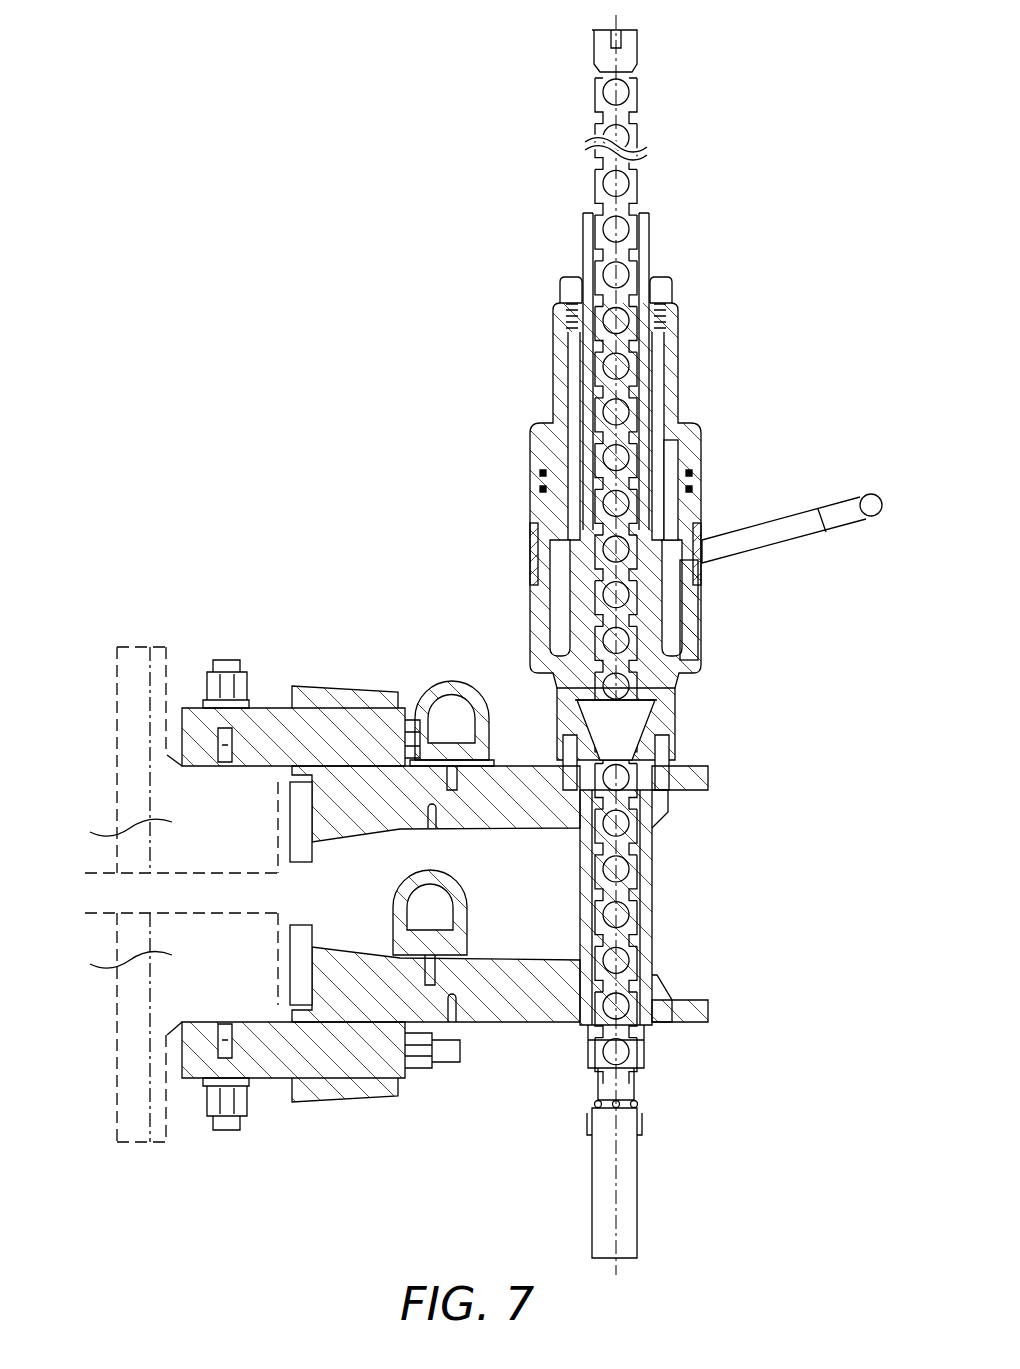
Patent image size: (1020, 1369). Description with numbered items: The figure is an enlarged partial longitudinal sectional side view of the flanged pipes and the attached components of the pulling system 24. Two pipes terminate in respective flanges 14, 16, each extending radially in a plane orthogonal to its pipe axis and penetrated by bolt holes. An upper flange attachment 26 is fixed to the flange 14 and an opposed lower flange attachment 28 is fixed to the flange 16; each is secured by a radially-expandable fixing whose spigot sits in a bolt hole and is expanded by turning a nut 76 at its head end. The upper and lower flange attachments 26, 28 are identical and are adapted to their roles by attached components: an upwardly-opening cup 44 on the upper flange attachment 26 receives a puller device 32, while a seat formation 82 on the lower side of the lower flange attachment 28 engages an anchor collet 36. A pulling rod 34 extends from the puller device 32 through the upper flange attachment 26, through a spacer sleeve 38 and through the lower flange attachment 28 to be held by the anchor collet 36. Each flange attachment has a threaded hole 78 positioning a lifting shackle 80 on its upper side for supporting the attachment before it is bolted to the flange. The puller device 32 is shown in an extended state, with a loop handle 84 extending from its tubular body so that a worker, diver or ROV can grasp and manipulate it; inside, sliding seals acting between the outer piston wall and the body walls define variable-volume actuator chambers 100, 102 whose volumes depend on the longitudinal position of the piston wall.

The flange 14 is at (168, 760).
The flange 16 is at (168, 1027).
The pulling system 24 is at (354, 560).
The upper flange attachment 26 is at (540, 829).
The lower flange attachment 28 is at (540, 1022).
The puller device 32 is at (530, 458).
The pulling rod 34 is at (645, 190).
The anchor collet 36 is at (640, 1194).
The spacer sleeve 38 is at (652, 880).
The cup 44 is at (680, 746).
The nut 76 is at (247, 680).
The threaded hole 78 is at (434, 822).
The lifting shackle 80 is at (452, 680).
The seat formation 82 is at (650, 1040).
The loop handle 84 is at (793, 520).
The actuator chamber 100 is at (686, 498).
The actuator chamber 102 is at (682, 612).